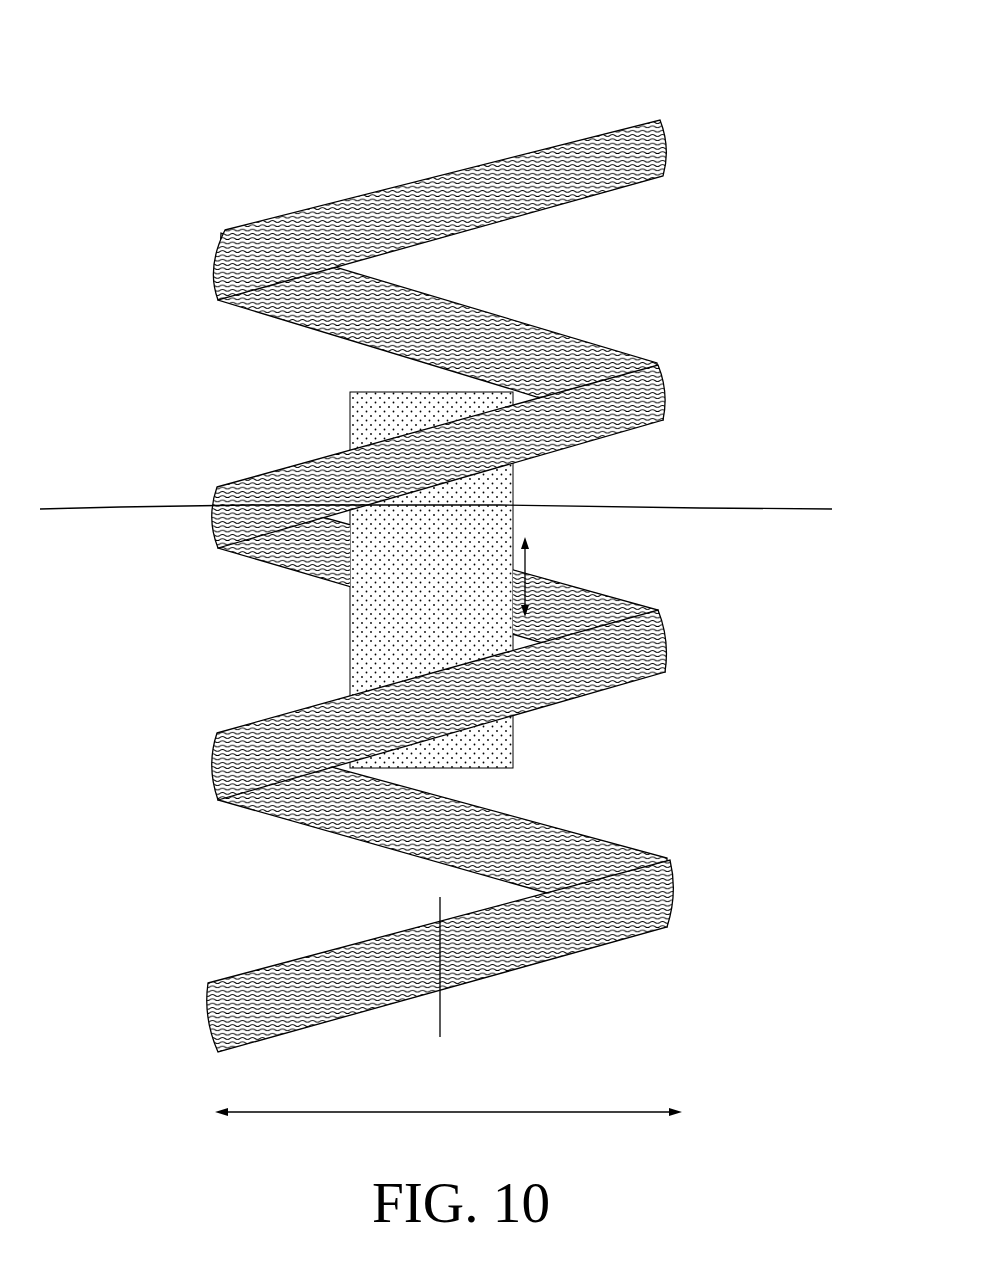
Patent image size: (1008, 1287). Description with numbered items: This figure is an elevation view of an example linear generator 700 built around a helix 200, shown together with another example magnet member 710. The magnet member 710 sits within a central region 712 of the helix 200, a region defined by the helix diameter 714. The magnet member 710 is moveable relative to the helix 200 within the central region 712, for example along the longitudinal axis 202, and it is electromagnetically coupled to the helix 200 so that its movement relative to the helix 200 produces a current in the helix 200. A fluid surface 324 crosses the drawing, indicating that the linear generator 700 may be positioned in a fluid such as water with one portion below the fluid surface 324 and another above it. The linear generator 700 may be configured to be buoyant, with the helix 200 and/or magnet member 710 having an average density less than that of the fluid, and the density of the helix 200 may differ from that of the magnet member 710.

The helix 200 is at (564, 130).
The longitudinal axis 202 is at (530, 578).
The fluid surface 324 is at (462, 510).
The linear generator 700 is at (712, 1000).
The magnet member 710 is at (418, 622).
The central region 712 is at (439, 990).
The helix diameter 714 is at (448, 1128).